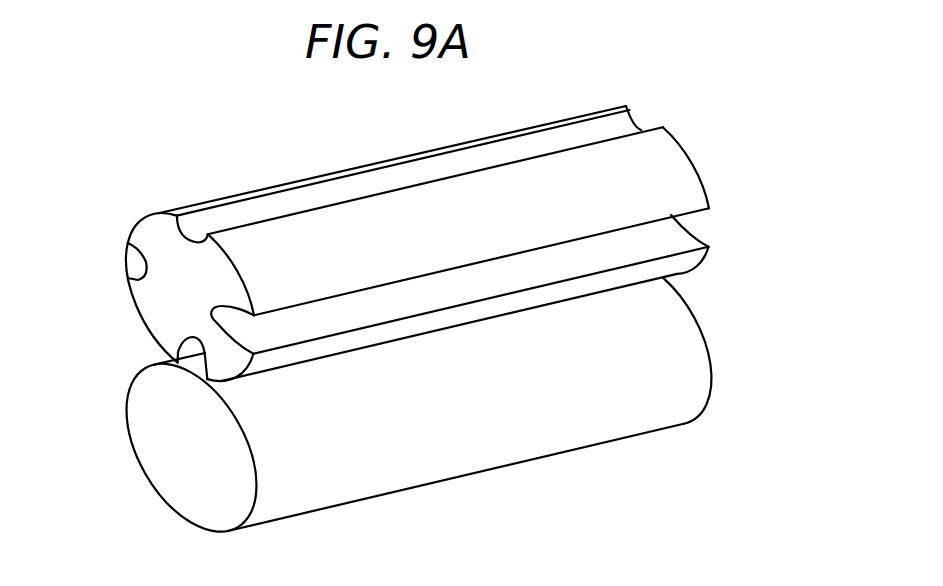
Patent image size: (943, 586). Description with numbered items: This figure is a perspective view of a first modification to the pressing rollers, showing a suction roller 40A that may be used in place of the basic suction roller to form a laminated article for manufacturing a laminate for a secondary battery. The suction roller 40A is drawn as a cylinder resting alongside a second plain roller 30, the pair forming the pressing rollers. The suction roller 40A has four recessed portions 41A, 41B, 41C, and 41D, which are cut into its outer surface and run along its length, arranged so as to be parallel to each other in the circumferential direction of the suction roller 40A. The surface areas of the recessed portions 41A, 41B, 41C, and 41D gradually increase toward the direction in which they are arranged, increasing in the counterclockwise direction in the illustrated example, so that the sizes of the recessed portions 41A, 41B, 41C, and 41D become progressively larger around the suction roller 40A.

The roller 30 is at (683, 343).
The suction roller 40A is at (409, 270).
The recessed portion 41A is at (204, 224).
The recessed portion 41B is at (138, 269).
The recessed portion 41C is at (191, 352).
The recessed portion 41D is at (280, 327).